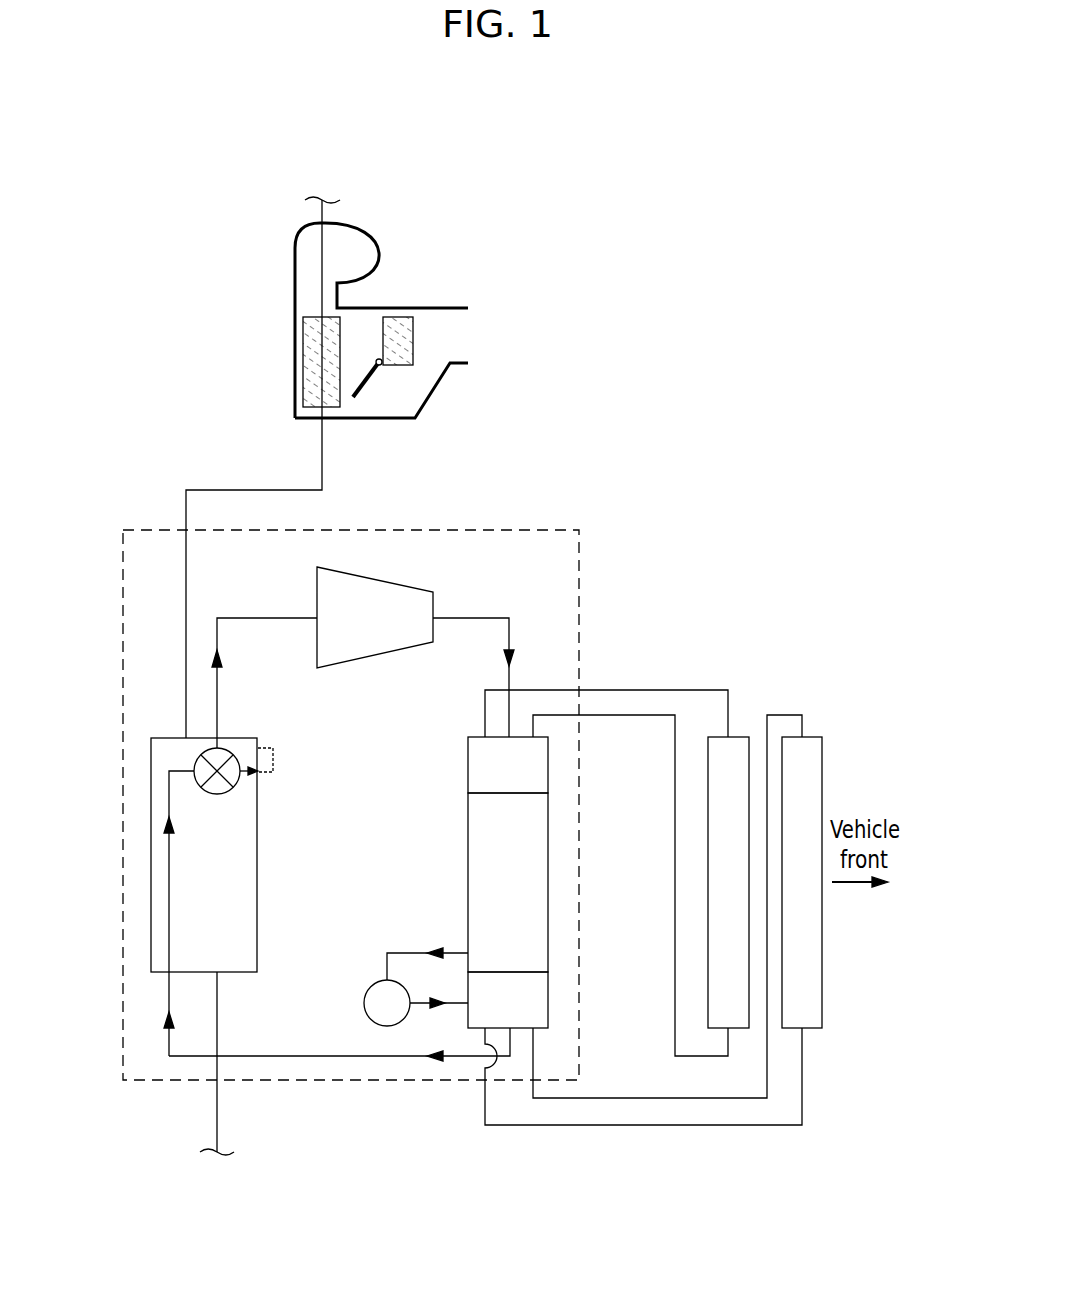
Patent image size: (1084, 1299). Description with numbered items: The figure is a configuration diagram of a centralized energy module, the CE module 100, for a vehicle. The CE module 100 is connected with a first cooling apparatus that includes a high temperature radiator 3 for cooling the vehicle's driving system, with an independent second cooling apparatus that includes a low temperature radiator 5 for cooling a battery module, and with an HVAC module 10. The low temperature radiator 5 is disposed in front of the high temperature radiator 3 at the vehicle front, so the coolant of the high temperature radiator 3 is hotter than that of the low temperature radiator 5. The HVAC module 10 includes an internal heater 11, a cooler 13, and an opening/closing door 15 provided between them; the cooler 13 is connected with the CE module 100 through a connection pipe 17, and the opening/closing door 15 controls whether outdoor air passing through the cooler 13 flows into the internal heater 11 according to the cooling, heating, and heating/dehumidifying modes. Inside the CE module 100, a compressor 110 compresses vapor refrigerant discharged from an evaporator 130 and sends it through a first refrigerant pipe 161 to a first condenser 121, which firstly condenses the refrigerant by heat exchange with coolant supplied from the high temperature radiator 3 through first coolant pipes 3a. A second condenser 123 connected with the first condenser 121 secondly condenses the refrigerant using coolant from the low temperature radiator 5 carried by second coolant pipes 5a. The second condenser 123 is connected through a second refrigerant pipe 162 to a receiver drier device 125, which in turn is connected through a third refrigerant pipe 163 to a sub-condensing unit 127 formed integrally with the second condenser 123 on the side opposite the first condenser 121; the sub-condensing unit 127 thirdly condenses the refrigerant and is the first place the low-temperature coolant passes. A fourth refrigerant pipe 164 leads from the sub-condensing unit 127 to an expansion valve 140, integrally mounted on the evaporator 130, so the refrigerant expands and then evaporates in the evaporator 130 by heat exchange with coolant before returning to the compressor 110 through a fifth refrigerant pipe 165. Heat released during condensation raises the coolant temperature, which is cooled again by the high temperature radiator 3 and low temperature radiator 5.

The HVAC module 10 is at (463, 292).
The internal heater 11 is at (413, 353).
The cooler 13 is at (303, 353).
The opening/closing door 15 is at (365, 385).
The connection pipe 17 is at (225, 488).
The CE module 100 is at (134, 516).
The compressor 110 is at (317, 585).
The first condenser 121 is at (548, 763).
The second condenser 123 is at (548, 890).
The receiver drier device 125 is at (367, 1017).
The sub-condensing unit 127 is at (548, 1002).
The evaporator 130 is at (257, 855).
The expansion valve 140 is at (227, 750).
The first refrigerant pipe 161 is at (472, 617).
The second refrigerant pipe 162 is at (403, 952).
The third refrigerant pipe 163 is at (422, 1007).
The fourth refrigerant pipe 164 is at (303, 1055).
The fifth refrigerant pipe 165 is at (218, 682).
The high temperature radiator 3 is at (735, 737).
The first coolant pipes 3a is at (635, 713).
The low temperature radiator 5 is at (810, 737).
The second coolant pipes 5a is at (647, 1100).